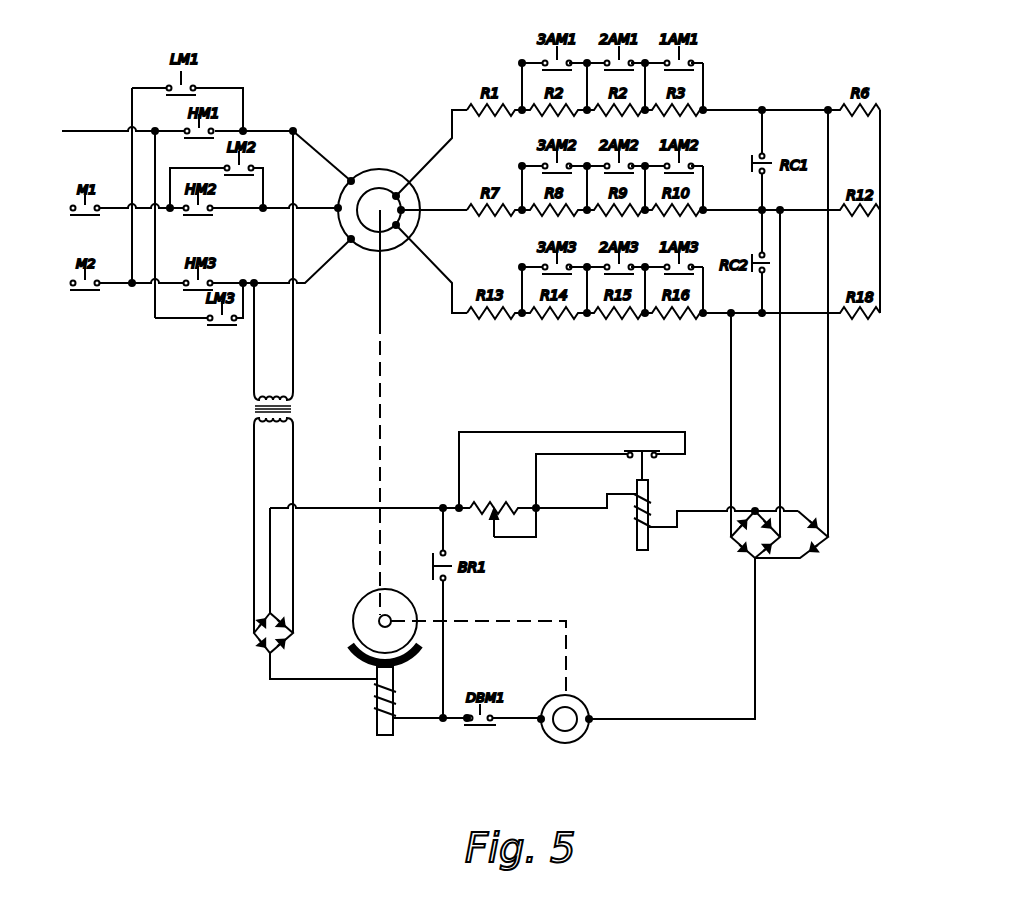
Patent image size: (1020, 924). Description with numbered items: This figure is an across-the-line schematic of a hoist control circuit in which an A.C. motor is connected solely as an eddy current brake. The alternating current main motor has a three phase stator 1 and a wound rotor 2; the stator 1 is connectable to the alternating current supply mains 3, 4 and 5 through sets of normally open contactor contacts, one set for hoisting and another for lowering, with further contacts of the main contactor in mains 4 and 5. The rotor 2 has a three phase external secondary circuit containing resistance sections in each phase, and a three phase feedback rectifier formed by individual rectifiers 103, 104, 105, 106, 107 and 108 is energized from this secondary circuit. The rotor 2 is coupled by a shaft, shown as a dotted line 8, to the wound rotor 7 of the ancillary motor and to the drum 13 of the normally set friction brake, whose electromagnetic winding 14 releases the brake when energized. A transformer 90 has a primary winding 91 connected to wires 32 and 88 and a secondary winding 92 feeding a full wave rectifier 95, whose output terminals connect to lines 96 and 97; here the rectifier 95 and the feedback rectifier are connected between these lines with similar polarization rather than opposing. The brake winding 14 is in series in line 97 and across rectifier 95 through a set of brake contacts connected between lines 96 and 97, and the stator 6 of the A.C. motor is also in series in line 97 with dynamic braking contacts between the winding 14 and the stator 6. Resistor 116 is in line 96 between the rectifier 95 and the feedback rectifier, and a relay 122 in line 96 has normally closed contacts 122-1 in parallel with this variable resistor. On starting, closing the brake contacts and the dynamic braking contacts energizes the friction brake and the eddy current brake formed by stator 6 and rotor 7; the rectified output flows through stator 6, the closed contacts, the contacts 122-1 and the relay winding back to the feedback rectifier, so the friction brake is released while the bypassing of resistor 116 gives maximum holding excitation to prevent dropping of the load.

The three phase stator 1 is at (373, 250).
The wound rotor 2 is at (404, 203).
The alternating current supply main 3 is at (88, 110).
The alternating current supply main 4 is at (70, 208).
The alternating current supply main 5 is at (62, 283).
The stator of ancillary motor 6 is at (556, 736).
The wound rotor 7 is at (580, 736).
The shaft 8 is at (356, 652).
The drum 13 is at (368, 606).
The electromagnetic winding 14 is at (377, 713).
The wire 32 is at (254, 355).
The wire 88 is at (293, 364).
The transformer 90 is at (293, 412).
The primary winding 91 is at (258, 398).
The secondary winding 92 is at (262, 421).
The full wave rectifier 95 is at (256, 648).
The wire 96 is at (568, 518).
The wire 97 is at (458, 725).
The rectifier 103 is at (812, 553).
The rectifier 104 is at (822, 523).
The rectifier 105 is at (765, 550).
The rectifier 106 is at (768, 520).
The rectifier 107 is at (745, 552).
The rectifier 108 is at (735, 526).
The resistor 116 is at (503, 502).
The relay 122 is at (637, 522).
The normally closed contacts 122-1 is at (641, 450).